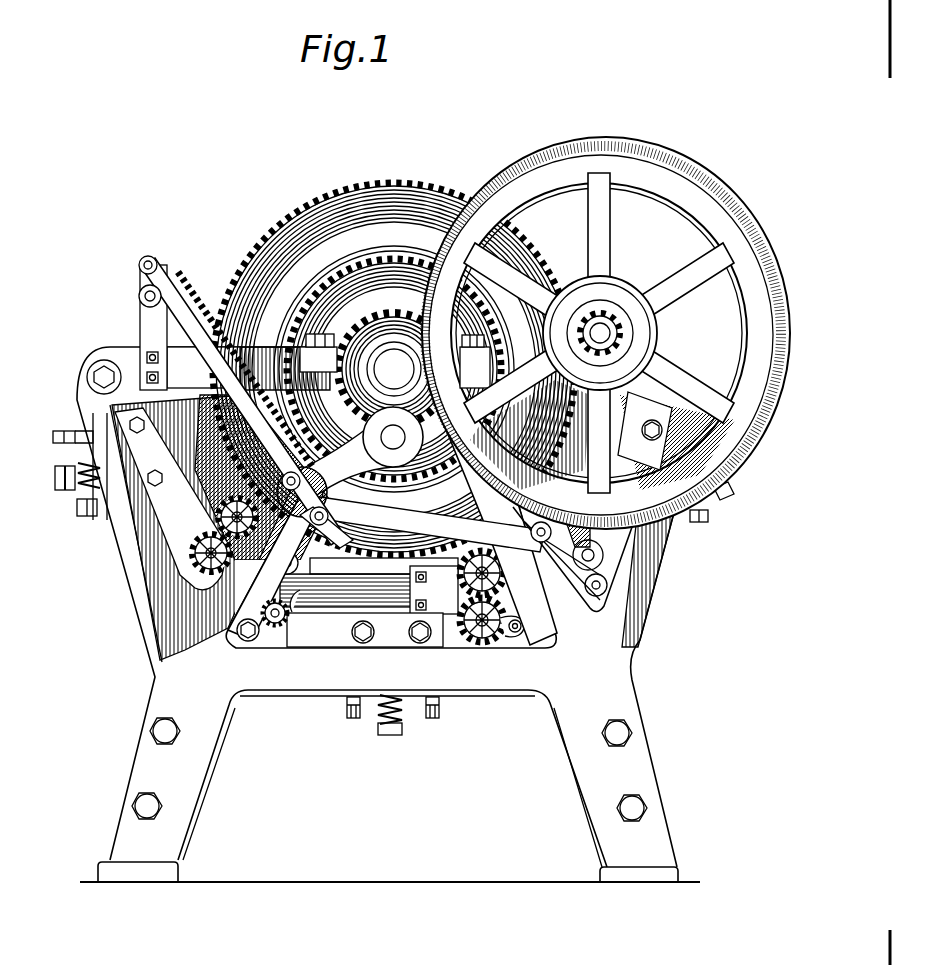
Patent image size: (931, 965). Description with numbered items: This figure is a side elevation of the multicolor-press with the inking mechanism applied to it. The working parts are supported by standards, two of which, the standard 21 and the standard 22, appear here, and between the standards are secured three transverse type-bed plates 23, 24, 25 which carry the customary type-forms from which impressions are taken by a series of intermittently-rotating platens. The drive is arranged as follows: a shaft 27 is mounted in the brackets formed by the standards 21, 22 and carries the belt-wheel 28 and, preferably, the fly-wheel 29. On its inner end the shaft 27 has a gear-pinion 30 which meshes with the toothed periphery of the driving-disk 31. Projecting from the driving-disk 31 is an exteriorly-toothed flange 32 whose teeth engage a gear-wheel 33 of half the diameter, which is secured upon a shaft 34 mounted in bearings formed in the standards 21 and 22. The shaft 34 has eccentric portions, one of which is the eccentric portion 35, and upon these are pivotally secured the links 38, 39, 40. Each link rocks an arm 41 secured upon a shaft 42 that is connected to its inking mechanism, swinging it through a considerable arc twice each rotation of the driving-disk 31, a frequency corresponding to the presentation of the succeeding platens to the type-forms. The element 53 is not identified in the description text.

The standard 21 is at (140, 590).
The standard 22 is at (388, 614).
The type-bed plate 23 is at (157, 493).
The type-bed plate 24 is at (390, 633).
The type-bed plate 25 is at (620, 538).
The shaft 27 is at (609, 333).
The belt-wheel 28 is at (628, 300).
The fly-wheel 29 is at (772, 455).
The gear-pinion 30 is at (603, 318).
The driving-disk 31 is at (394, 369).
The exteriorly-toothed flange 32 is at (394, 369).
The gear-wheel 33 is at (393, 497).
The shaft 34 is at (290, 520).
The eccentric portion 35 is at (262, 477).
The link 38 is at (190, 327).
The link 39 is at (490, 548).
The link 40 is at (247, 642).
The arm 41 is at (145, 272).
The shaft 42 is at (142, 300).
The rack plate 53 is at (369, 586).